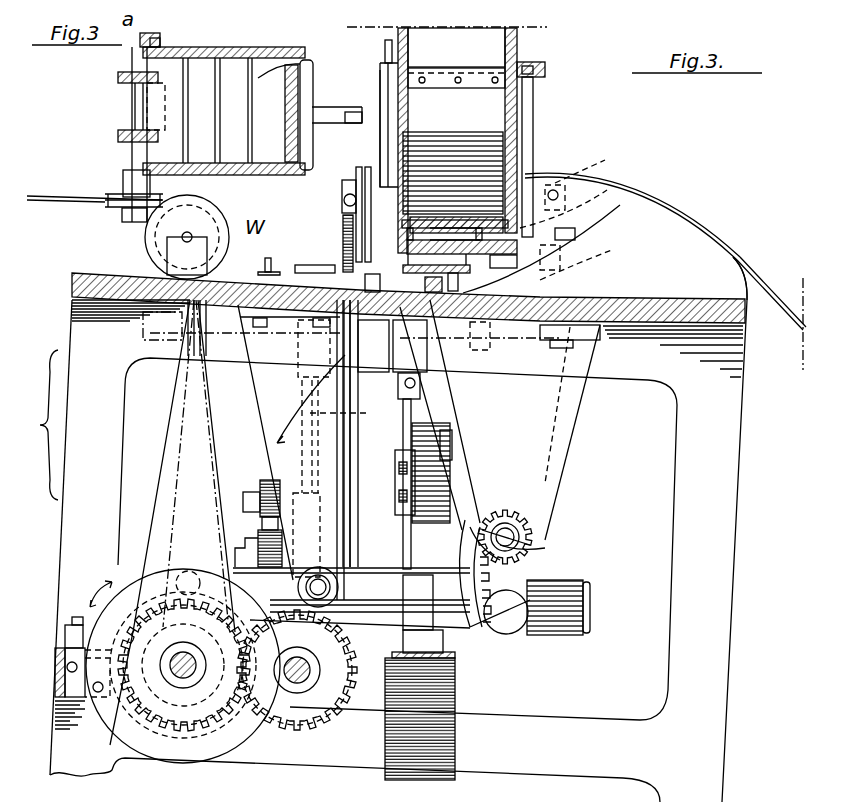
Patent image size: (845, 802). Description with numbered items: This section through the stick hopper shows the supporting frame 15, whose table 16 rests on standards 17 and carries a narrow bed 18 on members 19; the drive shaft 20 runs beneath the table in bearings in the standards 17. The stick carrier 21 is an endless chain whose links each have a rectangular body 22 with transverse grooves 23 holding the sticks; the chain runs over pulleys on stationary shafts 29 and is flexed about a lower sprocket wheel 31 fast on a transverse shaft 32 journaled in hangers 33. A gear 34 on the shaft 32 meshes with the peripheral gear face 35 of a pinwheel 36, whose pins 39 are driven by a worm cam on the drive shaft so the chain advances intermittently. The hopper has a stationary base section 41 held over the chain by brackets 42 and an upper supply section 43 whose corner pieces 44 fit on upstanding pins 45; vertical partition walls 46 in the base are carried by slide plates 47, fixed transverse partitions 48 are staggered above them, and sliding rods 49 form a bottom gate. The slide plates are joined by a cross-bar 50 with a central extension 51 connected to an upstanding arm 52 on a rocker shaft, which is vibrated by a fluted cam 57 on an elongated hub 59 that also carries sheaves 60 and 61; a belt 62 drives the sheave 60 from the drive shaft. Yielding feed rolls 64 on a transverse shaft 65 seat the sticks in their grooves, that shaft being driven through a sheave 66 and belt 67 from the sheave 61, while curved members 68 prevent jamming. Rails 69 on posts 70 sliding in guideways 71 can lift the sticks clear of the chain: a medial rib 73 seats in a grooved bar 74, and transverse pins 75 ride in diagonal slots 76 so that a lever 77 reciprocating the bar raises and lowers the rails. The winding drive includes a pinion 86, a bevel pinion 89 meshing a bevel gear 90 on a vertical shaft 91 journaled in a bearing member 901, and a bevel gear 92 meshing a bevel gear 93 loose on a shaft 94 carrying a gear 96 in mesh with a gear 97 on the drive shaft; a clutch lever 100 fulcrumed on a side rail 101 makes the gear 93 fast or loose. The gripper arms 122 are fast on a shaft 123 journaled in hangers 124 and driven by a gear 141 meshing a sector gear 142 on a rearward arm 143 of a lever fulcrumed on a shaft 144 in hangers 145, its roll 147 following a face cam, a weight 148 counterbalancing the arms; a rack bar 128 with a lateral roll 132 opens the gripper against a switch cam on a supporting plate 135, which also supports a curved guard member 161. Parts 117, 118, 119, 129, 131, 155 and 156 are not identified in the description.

In FIG. 3, the supporting frame 15 is at (36, 425).
In FIG. 3, the table 16 is at (95, 273).
In FIG. 3, the standards 17 is at (398, 529).
In FIG. 3, the bed 18 is at (517, 262).
In FIG. 3, the members 19 is at (562, 348).
In FIG. 3, the drive shaft 20 is at (172, 674).
In FIG. 3, the stick feeding and supporting element 21 is at (504, 740).
In FIG. 3, the rectangular body 22 is at (494, 657).
In FIG. 3, the transverse grooves 23 is at (442, 692).
In FIG. 3, the stationary shafts 29 is at (175, 342).
In FIG. 3, the lower sprocket wheel 31 is at (452, 490).
In FIG. 3, the transverse shaft 32 is at (590, 605).
In FIG. 3, the hangers 33 is at (350, 470).
In FIG. 3, the gear 34 is at (257, 542).
In FIG. 3, the peripheral gear face 35 is at (264, 492).
In FIG. 3, the pinwheel 36 is at (266, 480).
In FIG. 3, the pins 39 is at (246, 503).
In FIG. 3A, the stationary base section 41 is at (228, 47).
In FIG. 3, the stationary base section 41 is at (545, 118).
In FIG. 3A, the brackets 42 is at (140, 42).
In FIG. 3, the brackets 42 is at (398, 95).
In FIG. 3, the upper supply section 43 is at (545, 65).
In FIG. 3, the corner pieces 44 is at (533, 70).
In FIG. 3, the upstanding pins 45 is at (385, 46).
In FIG. 3A, the vertical partition walls 46 is at (266, 74).
In FIG. 3, the vertical partition walls 46 is at (453, 157).
In FIG. 3A, the slide plates 47 is at (162, 45).
In FIG. 3, the slide plates 47 is at (517, 160).
In FIG. 3, the fixed transverse partitions 48 is at (456, 45).
In FIG. 3, the rods 49 is at (533, 85).
In FIG. 3A, the cross-bar 50 is at (286, 90).
In FIG. 3A, the central extension 51 is at (320, 107).
In FIG. 3A, the upstanding arm 52 is at (352, 112).
In FIG. 3, the cam 57 is at (398, 390).
In FIG. 3, the elongated hub 59 is at (258, 362).
In FIG. 3, the sheave 60 is at (216, 342).
In FIG. 3, the sheave 61 is at (330, 360).
In FIG. 3, the belt 62 is at (205, 447).
In FIG. 3A, the feed rolls 64 is at (118, 77).
In FIG. 3A, the transverse shaft 65 is at (135, 106).
In FIG. 3, the transverse shaft 65 is at (345, 185).
In FIG. 3A, the sheave 66 is at (123, 180).
In FIG. 3, the sheave 66 is at (358, 167).
In FIG. 3A, the belt 67 is at (50, 196).
In FIG. 3, the belt 67 is at (368, 167).
In FIG. 3A, the curved members 68 is at (147, 117).
In FIG. 3, the rails 69 is at (558, 200).
In FIG. 3, the posts 70 is at (575, 234).
In FIG. 3, the guideways 71 is at (557, 252).
In FIG. 3, the longitudinal medial rib 73 is at (410, 346).
In FIG. 3, the grooved bar 74 is at (479, 347).
In FIG. 3, the transverse pins 75 is at (458, 285).
In FIG. 3, the diagonally-disposed slots 76 is at (373, 346).
In FIG. 3, the lever 77 is at (264, 255).
In FIG. 3, the pinion 86 is at (343, 232).
In FIG. 3, the bevel pinion 89 is at (318, 265).
In FIG. 3, the bevel gear 90 is at (231, 240).
In FIG. 3, the vertical shaft 91 is at (403, 425).
In FIG. 3, the bevel gear 92 is at (340, 615).
In FIG. 3, the bevel gear 93 is at (272, 705).
In FIG. 3, the shaft 94 is at (297, 682).
In FIG. 3, the gear 96 is at (322, 715).
In FIG. 3, the gear 97 is at (177, 703).
In FIG. 3, the lever 100 is at (398, 642).
In FIG. 3, the side rail 101 is at (55, 670).
In FIG. 3, the rod 117 is at (416, 432).
In FIG. 3, the ratchet 118 is at (445, 436).
In FIG. 3, the pawl 119 is at (452, 468).
In FIG. 3, the radial arms 122 is at (560, 445).
In FIG. 3, the longitudinal shaft 123 is at (548, 546).
In FIG. 3, the hangers 124 is at (556, 482).
In FIG. 3, the rack bar 128 is at (614, 192).
In FIG. 3, the arc 129 is at (605, 207).
In FIG. 3, the arc 131 is at (594, 253).
In FIG. 3, the lateral roll 132 is at (598, 165).
In FIG. 3, the upstanding supporting plate 135 is at (721, 266).
In FIG. 3, the gear 141 is at (534, 536).
In FIG. 3, the sector gear 142 is at (585, 588).
In FIG. 3, the rearward arm 143 is at (492, 568).
In FIG. 3, the shaft 144 is at (326, 578).
In FIG. 3, the hangers 145 is at (284, 400).
In FIG. 3, the roll 147 is at (190, 571).
In FIG. 3, the weight 148 is at (520, 620).
In FIG. 3, the pawl 155 is at (396, 448).
In FIG. 3, the roller 156 is at (345, 600).
In FIG. 3, the curved guard member 161 is at (710, 226).
In FIG. 3, the bearing member 901 is at (320, 520).